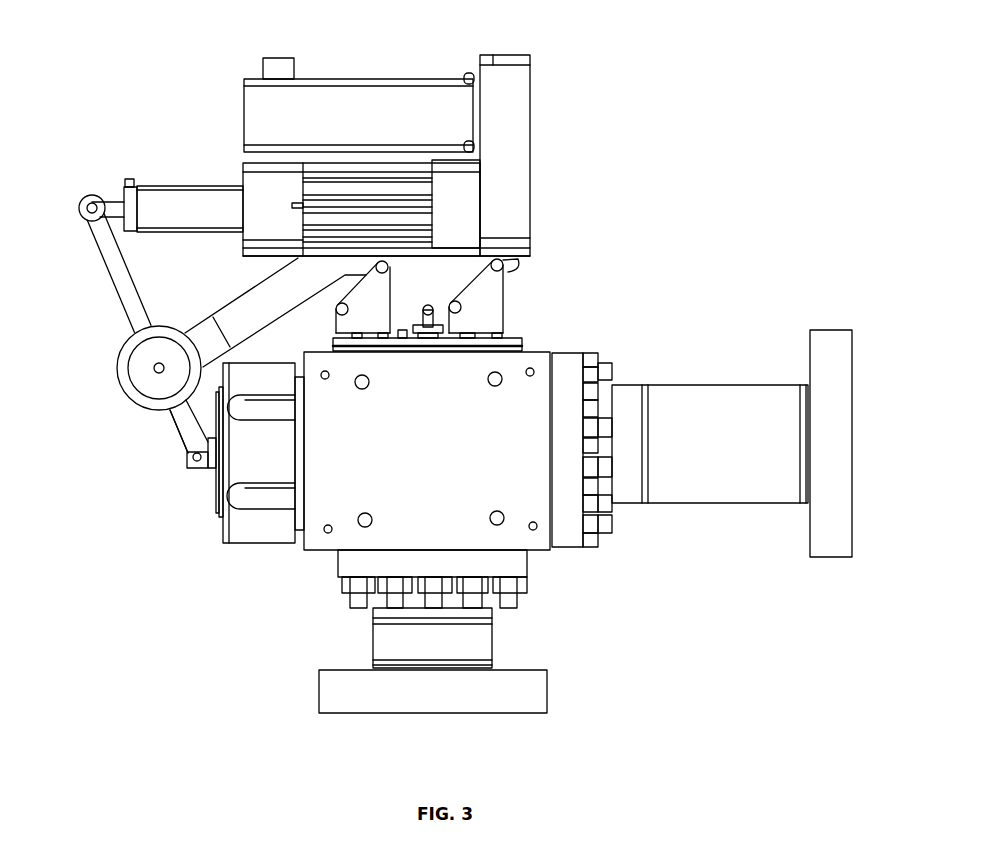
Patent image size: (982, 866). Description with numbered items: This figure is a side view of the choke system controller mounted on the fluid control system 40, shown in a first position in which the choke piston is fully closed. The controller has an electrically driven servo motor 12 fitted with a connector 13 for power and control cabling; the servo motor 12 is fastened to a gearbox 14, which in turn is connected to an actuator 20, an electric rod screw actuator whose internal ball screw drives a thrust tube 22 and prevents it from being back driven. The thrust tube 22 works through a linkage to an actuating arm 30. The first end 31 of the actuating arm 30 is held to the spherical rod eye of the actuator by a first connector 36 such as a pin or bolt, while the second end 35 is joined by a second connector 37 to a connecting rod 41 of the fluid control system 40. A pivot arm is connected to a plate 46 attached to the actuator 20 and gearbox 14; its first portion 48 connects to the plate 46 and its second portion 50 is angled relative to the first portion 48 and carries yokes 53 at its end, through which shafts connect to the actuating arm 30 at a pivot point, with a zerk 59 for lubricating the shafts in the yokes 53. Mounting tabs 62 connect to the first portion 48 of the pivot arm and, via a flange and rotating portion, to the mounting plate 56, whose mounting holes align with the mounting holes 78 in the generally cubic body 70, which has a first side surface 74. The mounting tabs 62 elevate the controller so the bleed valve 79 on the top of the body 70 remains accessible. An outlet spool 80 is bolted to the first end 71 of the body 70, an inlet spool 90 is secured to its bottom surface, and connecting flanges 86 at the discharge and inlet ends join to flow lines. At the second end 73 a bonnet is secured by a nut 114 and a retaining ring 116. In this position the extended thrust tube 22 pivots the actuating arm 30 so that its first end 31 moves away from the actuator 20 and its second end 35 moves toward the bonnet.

The servo motor 12 is at (370, 110).
The connector 13 is at (276, 57).
The gearbox 14 is at (530, 145).
The actuator 20 is at (393, 185).
The thrust tube 22 is at (177, 185).
The actuating arm 30 is at (105, 262).
The first end 31 is at (88, 222).
The second end 35 is at (187, 438).
The first connector 36 is at (80, 216).
The second connector 37 is at (187, 461).
The fluid control system 40 is at (650, 353).
The connecting rod 41 is at (211, 470).
The plate 46 is at (530, 250).
The first portion 48 is at (515, 263).
The second portion 50 is at (256, 300).
The yokes 53 is at (122, 343).
The mounting plate 56 is at (522, 343).
The zerk 59 is at (153, 370).
The mounting tabs 62 is at (350, 321).
The body 70 is at (306, 540).
The first end 71 is at (553, 527).
The second end 73 is at (298, 545).
The first side surface 74 is at (340, 552).
The mounting holes 78 is at (367, 387).
The bleed valve 79 is at (433, 312).
The outlet spool 80 is at (748, 383).
The connecting flanges 86 is at (825, 557).
The inlet spool 90 is at (492, 642).
The nut 114 is at (240, 548).
The retaining ring 116 is at (172, 415).